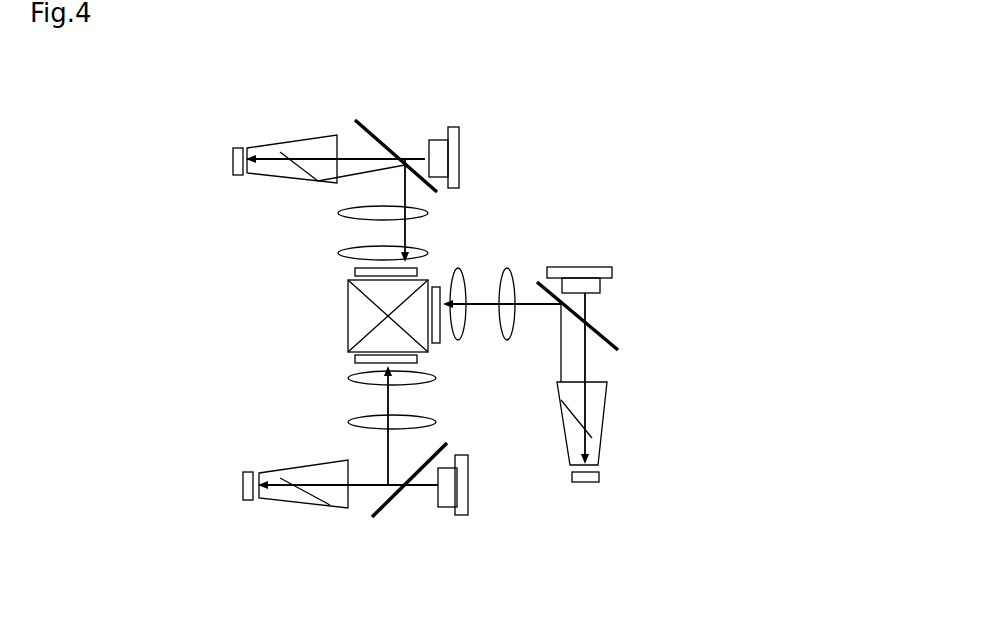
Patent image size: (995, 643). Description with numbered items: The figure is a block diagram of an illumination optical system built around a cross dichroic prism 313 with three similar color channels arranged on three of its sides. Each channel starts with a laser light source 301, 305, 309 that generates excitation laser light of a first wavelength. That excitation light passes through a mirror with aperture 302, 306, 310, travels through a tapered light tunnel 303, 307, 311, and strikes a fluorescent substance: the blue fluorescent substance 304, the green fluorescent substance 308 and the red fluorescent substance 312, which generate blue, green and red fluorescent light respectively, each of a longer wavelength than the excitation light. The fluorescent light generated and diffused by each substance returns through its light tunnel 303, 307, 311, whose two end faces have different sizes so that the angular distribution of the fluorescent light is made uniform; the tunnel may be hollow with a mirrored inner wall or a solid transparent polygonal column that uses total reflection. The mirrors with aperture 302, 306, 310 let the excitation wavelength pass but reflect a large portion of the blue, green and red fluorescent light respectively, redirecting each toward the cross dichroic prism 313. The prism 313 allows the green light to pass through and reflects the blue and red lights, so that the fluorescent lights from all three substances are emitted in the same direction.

The laser light source 301 is at (460, 517).
The mirror with aperture 302 is at (372, 517).
The light tunnel 303 is at (305, 475).
The blue fluorescent substance 304 is at (248, 500).
The laser light source 305 is at (605, 267).
The mirror with aperture 306 is at (705, 316).
The light tunnel 307 is at (604, 398).
The green fluorescent substance 308 is at (582, 482).
The laser light source 309 is at (452, 128).
The mirror with aperture 310 is at (355, 120).
The light tunnel 311 is at (270, 152).
The red fluorescent substance 312 is at (236, 177).
The cross dichroic prism 313 is at (348, 303).